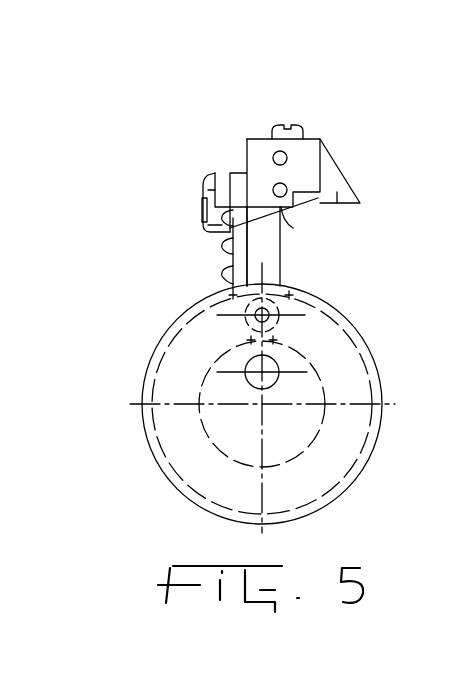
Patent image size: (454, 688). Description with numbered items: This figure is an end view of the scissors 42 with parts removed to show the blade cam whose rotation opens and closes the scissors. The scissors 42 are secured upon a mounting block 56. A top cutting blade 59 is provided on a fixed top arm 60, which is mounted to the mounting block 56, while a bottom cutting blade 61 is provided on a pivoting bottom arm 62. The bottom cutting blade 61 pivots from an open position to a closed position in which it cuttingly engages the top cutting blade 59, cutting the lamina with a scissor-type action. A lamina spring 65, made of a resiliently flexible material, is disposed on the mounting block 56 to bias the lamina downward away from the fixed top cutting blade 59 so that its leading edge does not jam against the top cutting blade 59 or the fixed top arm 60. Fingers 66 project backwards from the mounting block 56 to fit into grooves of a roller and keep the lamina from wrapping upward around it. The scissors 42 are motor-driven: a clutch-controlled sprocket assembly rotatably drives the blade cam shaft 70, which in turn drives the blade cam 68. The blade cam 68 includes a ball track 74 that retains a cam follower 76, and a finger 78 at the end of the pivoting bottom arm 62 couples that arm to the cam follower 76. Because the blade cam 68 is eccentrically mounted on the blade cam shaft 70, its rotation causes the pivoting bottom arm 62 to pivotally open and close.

The scissors 42 is at (207, 110).
The mounting block 56 is at (310, 148).
The top cutting blade 59 is at (217, 175).
The fixed top arm 60 is at (240, 172).
The bottom cutting blade 61 is at (227, 263).
The pivoting bottom arm 62 is at (272, 248).
The lamina spring 65 is at (305, 205).
The fingers 66 is at (337, 185).
The blade cam 68 is at (380, 376).
The blade cam shaft 70 is at (249, 383).
The ball track 74 is at (331, 470).
The cam follower 76 is at (283, 337).
The finger 78 is at (270, 312).